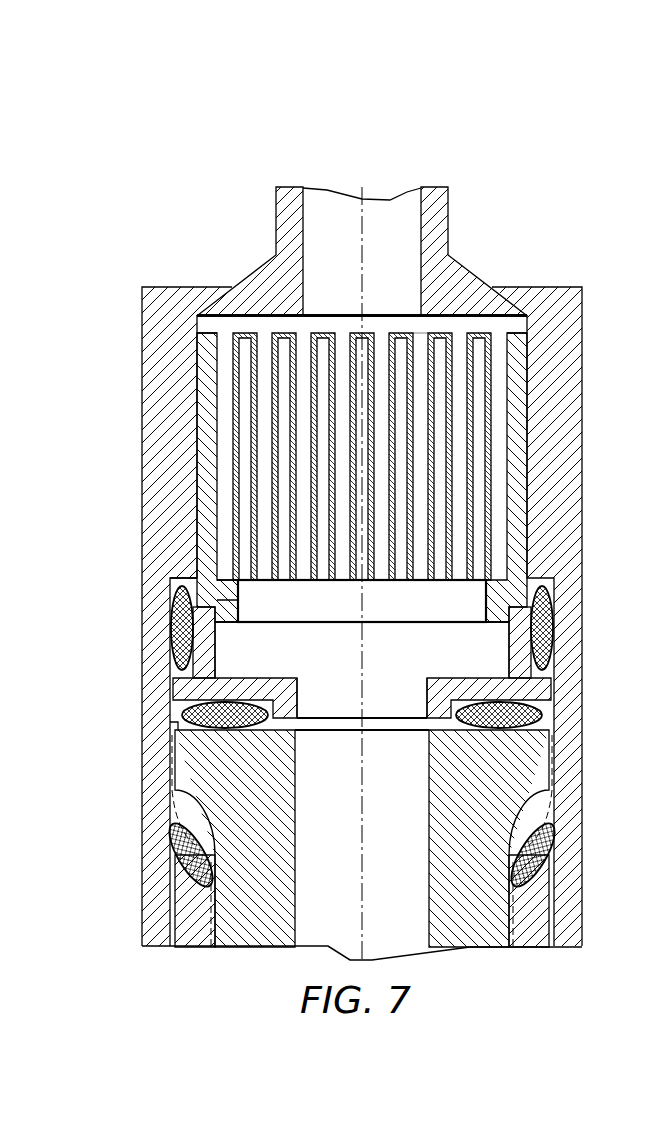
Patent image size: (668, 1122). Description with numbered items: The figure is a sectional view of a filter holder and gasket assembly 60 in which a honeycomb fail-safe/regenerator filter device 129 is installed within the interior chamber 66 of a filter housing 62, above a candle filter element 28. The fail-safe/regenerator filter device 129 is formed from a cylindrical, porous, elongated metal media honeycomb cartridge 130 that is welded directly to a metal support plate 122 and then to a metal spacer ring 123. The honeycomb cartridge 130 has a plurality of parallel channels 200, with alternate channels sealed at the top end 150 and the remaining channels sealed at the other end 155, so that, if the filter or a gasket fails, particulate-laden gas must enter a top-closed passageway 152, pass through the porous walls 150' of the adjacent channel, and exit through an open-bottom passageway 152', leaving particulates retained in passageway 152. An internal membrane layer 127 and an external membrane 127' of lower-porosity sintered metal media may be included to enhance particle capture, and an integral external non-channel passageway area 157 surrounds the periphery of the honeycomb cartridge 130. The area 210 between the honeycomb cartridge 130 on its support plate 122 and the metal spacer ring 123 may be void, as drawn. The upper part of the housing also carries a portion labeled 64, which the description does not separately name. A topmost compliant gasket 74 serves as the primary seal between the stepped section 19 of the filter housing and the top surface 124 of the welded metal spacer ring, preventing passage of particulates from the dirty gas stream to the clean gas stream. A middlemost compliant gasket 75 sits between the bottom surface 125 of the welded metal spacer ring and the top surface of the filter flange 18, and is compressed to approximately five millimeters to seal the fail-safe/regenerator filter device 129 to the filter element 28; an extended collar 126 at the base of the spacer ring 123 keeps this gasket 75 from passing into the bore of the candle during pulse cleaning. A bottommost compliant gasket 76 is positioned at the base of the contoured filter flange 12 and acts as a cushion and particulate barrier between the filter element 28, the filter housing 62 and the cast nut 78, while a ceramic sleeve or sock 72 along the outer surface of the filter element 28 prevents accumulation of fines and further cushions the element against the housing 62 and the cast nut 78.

The filter holder and gasket assembly 60 is at (170, 237).
The porous metal media honeycomb cartridge 130 is at (260, 326).
The fail-safe/regenerator filter device 129 is at (228, 328).
The top end 150 is at (338, 420).
The open bottom passageway 152' is at (403, 420).
The external membrane 127' is at (468, 278).
The internal membrane layer 127 is at (499, 414).
The housing upper portion 64 is at (568, 298).
The interior chamber 66 is at (515, 325).
The filter housing 62 is at (578, 433).
The non-channel passageway area 157 is at (515, 468).
The channel walls 150' is at (566, 456).
The metal support plate 122 is at (186, 578).
The stepped section of the filter housing 19 is at (178, 606).
The top surface of the welded metal spacer ring 124 is at (182, 680).
The topmost compliant gasket 74 is at (558, 614).
The bottom surface of the welded metal spacer ring 125 is at (178, 712).
The filter flange 18 is at (175, 726).
The metal spacer ring 123 is at (215, 650).
The passageways 200 is at (278, 592).
The other end 155 is at (300, 581).
The top closed passageway 152 is at (362, 618).
The area between cartridge and spacer ring 210 is at (390, 663).
The middlemost compliant gasket 75 is at (540, 714).
The extended collar 126 is at (318, 702).
The contoured filter flange 12 is at (200, 787).
The ceramic sleeve or sock 72 is at (558, 800).
The bottommost compliant gasket 76 is at (540, 838).
The cast nut 78 is at (190, 895).
The filter element 28 is at (240, 937).